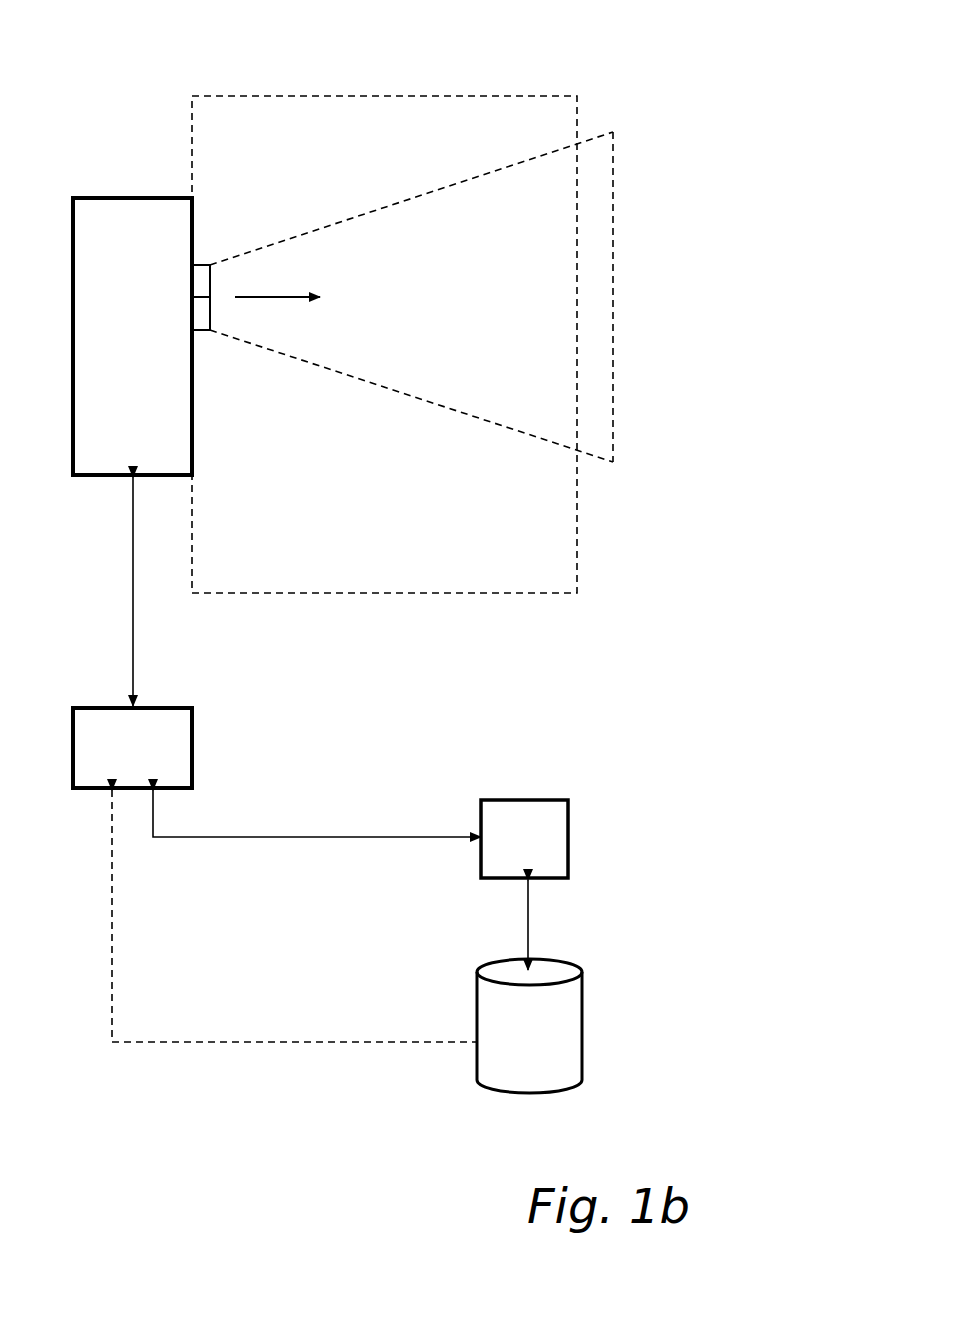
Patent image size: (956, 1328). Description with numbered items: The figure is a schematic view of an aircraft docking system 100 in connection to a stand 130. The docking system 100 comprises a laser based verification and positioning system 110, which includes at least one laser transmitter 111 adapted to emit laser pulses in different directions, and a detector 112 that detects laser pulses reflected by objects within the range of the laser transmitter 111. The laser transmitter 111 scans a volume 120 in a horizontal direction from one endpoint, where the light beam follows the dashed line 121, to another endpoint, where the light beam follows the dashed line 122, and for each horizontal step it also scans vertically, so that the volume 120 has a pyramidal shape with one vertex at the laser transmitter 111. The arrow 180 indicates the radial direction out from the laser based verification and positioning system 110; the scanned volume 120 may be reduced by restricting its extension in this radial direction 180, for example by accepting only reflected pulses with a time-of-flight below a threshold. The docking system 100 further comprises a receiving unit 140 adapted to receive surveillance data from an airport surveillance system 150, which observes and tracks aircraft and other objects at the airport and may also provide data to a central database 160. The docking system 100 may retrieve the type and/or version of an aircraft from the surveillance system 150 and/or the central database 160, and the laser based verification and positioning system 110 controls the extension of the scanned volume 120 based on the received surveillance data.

The aircraft docking system 100 is at (375, 38).
The laser based verification and positioning system 110 is at (132, 336).
The laser transmitter 111 is at (201, 270).
The detector 112 is at (201, 318).
The volume 120 is at (411, 307).
The dashed line 121 is at (313, 232).
The dashed line 122 is at (330, 372).
The stand 130 is at (543, 118).
The receiving unit 140 is at (132, 748).
The airport surveillance system 150 is at (524, 839).
The central database 160 is at (529, 1026).
The radial direction 180 is at (288, 296).